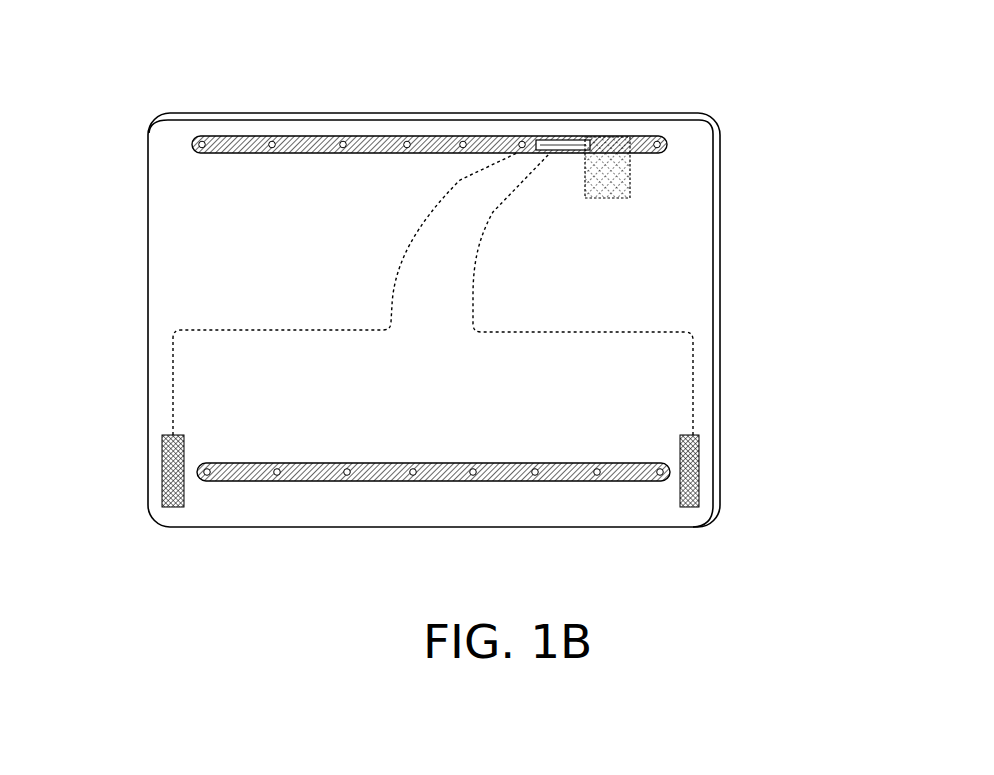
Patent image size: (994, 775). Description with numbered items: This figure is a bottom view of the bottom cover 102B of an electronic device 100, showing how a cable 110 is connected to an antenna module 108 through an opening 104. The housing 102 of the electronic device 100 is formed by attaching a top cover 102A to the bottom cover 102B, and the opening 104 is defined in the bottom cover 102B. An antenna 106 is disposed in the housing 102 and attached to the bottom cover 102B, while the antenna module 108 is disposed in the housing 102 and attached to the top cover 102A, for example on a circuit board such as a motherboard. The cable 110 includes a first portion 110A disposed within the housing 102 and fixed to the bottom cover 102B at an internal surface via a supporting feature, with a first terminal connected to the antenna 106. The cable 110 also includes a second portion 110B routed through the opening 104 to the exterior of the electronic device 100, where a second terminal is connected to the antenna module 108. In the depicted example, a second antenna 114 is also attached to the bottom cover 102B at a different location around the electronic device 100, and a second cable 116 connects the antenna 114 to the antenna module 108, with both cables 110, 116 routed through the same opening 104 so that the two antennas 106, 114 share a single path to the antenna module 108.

The electronic device 100 is at (474, 319).
The housing 102 is at (533, 320).
The top cover 102A is at (720, 160).
The bottom cover 102B is at (720, 126).
The opening 104 is at (583, 134).
The antenna 106 is at (690, 464).
The antenna module 108 is at (633, 192).
The cable 110 is at (433, 225).
The first portion 110A is at (495, 213).
The second portion 110B is at (565, 148).
The antenna 114 is at (165, 470).
The cable 116 is at (173, 398).